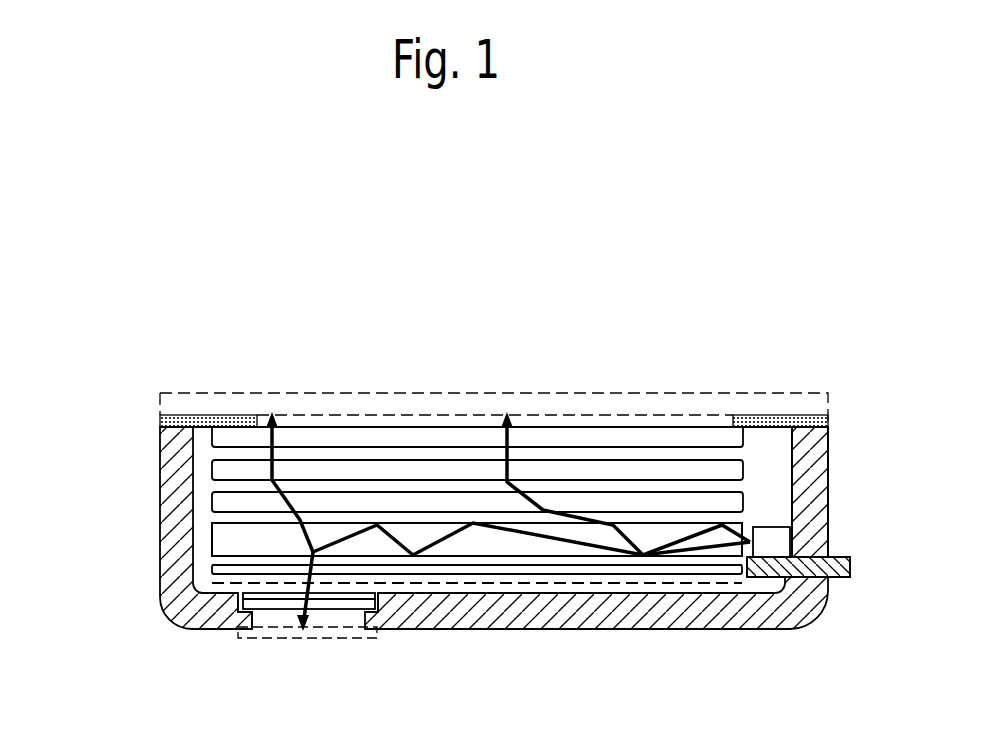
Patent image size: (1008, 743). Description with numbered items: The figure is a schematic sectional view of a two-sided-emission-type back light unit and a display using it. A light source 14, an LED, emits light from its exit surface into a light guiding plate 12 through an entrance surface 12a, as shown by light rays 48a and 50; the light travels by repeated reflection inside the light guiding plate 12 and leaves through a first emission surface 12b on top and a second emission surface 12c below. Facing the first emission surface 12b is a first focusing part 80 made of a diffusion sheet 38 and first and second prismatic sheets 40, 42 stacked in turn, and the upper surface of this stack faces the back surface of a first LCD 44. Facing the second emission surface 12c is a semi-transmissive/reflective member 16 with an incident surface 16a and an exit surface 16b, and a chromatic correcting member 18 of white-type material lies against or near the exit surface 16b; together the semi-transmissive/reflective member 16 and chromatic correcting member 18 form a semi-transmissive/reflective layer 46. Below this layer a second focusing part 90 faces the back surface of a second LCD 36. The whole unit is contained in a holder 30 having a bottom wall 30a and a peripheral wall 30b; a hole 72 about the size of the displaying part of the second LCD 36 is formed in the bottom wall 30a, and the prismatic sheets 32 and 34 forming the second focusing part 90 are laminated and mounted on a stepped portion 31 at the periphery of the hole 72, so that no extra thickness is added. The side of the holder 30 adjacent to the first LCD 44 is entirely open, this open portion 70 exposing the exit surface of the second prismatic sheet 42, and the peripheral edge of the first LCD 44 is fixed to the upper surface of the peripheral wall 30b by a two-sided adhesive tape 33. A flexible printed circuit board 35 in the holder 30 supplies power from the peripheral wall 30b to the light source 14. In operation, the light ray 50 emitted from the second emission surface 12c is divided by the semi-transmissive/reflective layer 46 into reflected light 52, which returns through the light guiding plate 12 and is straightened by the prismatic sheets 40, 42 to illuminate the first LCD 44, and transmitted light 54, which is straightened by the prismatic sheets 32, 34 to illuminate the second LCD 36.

The light guiding plate 12 is at (541, 560).
The entrance surface 12a is at (743, 521).
The first emission surface 12b is at (240, 523).
The second emission surface 12c is at (496, 557).
The light source 14 is at (790, 538).
The semi-transmissive/reflective member 16 is at (212, 570).
The incident surface 16a is at (230, 558).
The exit surface 16b is at (460, 575).
The chromatic correcting member 18 is at (215, 583).
The holder 30 is at (775, 640).
The bottom wall 30a is at (742, 630).
The peripheral wall 30b is at (828, 447).
The stepped portion 31 is at (236, 630).
The prismatic sheet 32 is at (378, 638).
The two-sided adhesive tape 33 is at (830, 423).
The prismatic sheet 34 is at (345, 611).
The flexible printed circuit board 35 is at (850, 577).
The second LCD 36 is at (295, 600).
The diffusion sheet 38 is at (212, 500).
The first prismatic sheet 40 is at (212, 470).
The second prismatic sheet 42 is at (212, 438).
The first LCD 44 is at (415, 402).
The semi-transmissive/reflective layer 46 is at (396, 607).
The light ray 48a is at (690, 552).
The light ray 50 is at (603, 545).
The reflected light 52 is at (277, 442).
The transmitted light 54 is at (256, 612).
The open portion 70 is at (778, 437).
The hole 72 is at (381, 589).
The first focusing part 80 is at (380, 452).
The second focusing part 90 is at (322, 628).